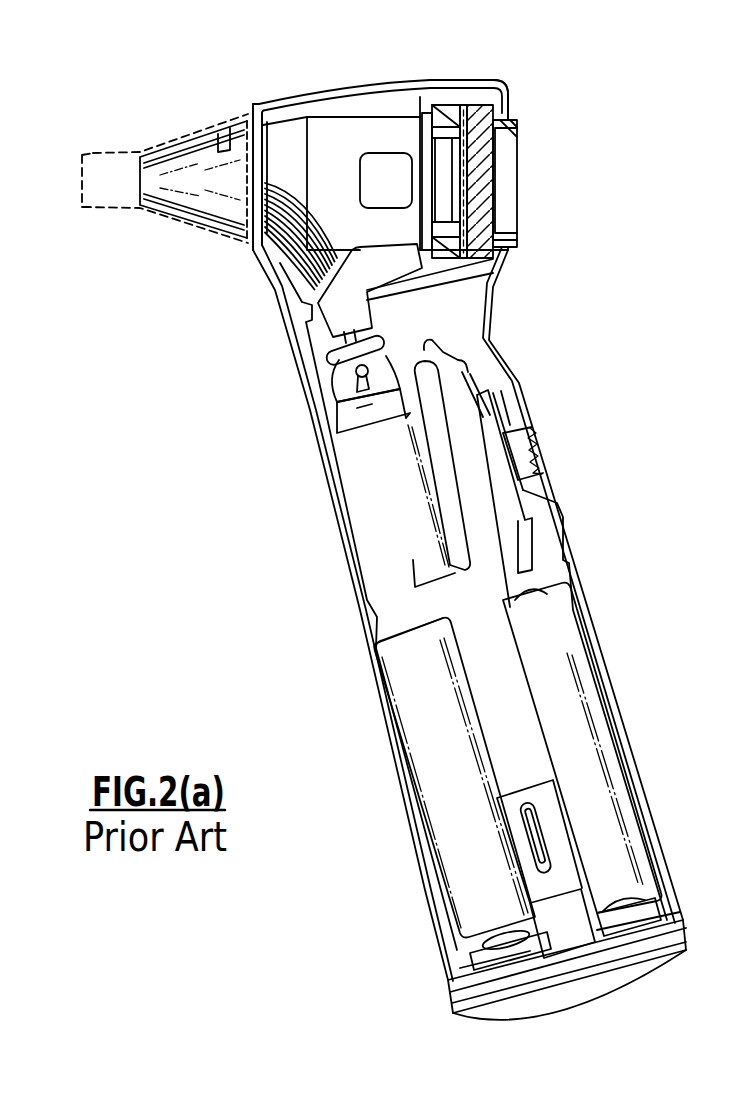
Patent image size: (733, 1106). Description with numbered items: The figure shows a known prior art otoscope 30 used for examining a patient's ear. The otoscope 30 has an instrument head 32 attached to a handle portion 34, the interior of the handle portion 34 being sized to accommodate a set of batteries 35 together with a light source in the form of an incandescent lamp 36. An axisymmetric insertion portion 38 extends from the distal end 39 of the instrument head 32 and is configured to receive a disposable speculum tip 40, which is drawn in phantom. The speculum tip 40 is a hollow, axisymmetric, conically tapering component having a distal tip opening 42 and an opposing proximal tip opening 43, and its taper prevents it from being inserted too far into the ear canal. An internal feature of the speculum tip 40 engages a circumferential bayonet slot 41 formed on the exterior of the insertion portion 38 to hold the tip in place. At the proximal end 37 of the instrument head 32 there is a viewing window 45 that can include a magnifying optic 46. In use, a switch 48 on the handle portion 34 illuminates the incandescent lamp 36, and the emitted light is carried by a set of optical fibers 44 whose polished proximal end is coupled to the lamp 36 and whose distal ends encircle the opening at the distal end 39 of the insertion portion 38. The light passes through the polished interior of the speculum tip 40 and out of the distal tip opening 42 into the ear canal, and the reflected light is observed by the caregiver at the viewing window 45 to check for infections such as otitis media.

The otoscope 30 is at (108, 41).
The instrument head 32 is at (437, 78).
The handle portion 34 is at (378, 640).
The batteries 35 is at (573, 710).
The incandescent lamp 36 is at (340, 413).
The proximal end of the instrument head 37 is at (497, 78).
The axisymmetric insertion portion 38 is at (170, 150).
The distal end of the instrument head 39 is at (133, 196).
The speculum tip 40 is at (93, 153).
The circumferential bayonet slot 41 is at (222, 134).
The distal tip opening 42 is at (83, 185).
The proximal tip opening 43 is at (235, 122).
The optical fibers 44 is at (293, 253).
The viewing window 45 is at (517, 127).
The magnifying optic 46 is at (513, 208).
The switch 48 is at (530, 460).